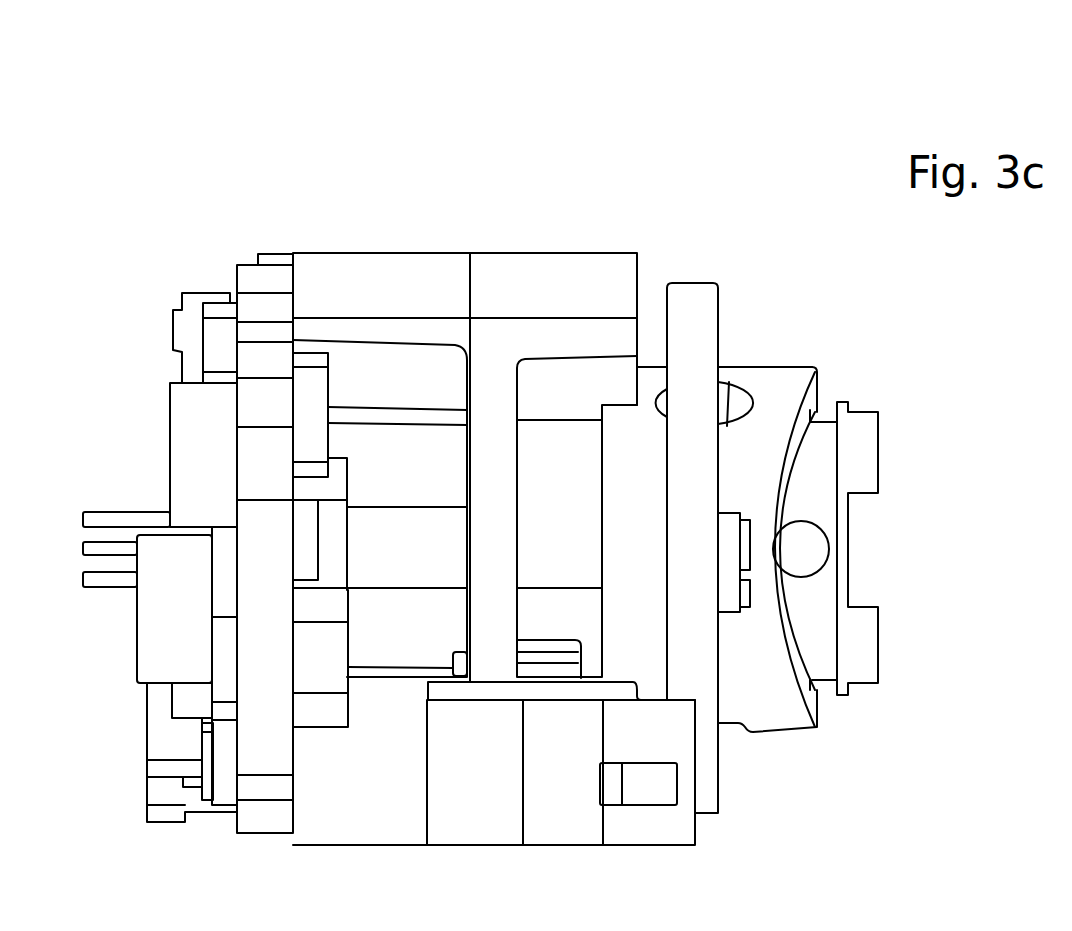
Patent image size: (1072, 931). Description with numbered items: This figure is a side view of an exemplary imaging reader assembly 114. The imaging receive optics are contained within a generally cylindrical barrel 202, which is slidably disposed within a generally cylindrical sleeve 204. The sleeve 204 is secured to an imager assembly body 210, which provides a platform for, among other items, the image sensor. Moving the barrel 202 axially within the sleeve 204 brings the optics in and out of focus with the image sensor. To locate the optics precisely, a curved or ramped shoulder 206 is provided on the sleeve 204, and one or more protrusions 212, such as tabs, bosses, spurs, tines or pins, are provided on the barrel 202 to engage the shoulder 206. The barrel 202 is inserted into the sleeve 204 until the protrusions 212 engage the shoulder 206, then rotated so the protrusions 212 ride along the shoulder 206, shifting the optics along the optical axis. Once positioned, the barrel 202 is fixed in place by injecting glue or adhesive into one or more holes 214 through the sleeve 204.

The imaging reader assembly 114 is at (569, 160).
The imager assembly body 210 is at (350, 270).
The hole 214 is at (740, 390).
The sleeve 204 is at (785, 378).
The curved or ramped shoulder 206 is at (787, 478).
The protrusions 212 is at (810, 552).
The barrel 202 is at (810, 635).